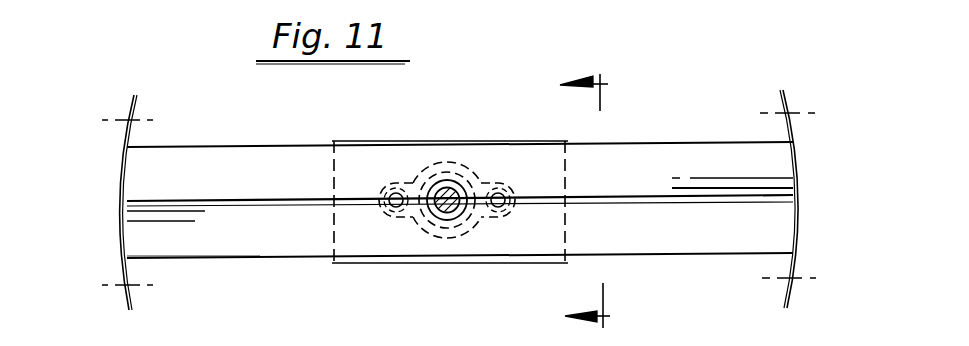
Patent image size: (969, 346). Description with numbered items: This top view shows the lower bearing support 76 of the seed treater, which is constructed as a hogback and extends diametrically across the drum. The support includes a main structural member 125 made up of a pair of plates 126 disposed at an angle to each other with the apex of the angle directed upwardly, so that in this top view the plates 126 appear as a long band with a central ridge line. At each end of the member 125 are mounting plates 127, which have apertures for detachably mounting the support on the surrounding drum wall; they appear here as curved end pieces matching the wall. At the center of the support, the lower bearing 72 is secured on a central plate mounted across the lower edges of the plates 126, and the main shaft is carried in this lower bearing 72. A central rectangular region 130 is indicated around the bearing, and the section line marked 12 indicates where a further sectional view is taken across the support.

The section line 12- 12 is at (652, 94).
The lower bearing 72 is at (483, 177).
The lower bearing support 76 is at (255, 147).
The main structural member 125 is at (262, 263).
The plates 126 is at (694, 216).
The mounting plates 127 is at (121, 207).
The clamp plate 130 is at (389, 141).